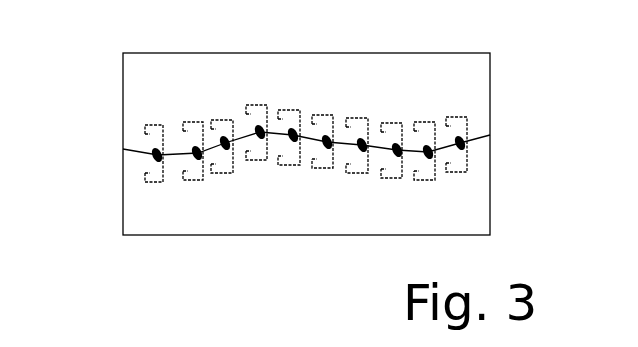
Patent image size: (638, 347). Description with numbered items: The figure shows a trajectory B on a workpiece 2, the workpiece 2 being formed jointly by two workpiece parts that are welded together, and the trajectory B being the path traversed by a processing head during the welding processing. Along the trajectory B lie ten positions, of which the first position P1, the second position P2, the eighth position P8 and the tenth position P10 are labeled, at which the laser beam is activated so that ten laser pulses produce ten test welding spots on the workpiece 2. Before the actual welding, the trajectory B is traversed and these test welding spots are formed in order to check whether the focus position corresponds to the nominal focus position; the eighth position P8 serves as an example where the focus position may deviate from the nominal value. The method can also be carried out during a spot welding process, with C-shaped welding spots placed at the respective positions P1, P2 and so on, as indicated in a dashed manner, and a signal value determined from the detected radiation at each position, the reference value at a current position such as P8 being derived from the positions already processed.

The workpiece 2 is at (129, 100).
The trajectory B is at (237, 133).
The first position P1 is at (155, 157).
The second position P2 is at (198, 157).
The eighth position P8 is at (397, 146).
The tenth position P10 is at (462, 145).